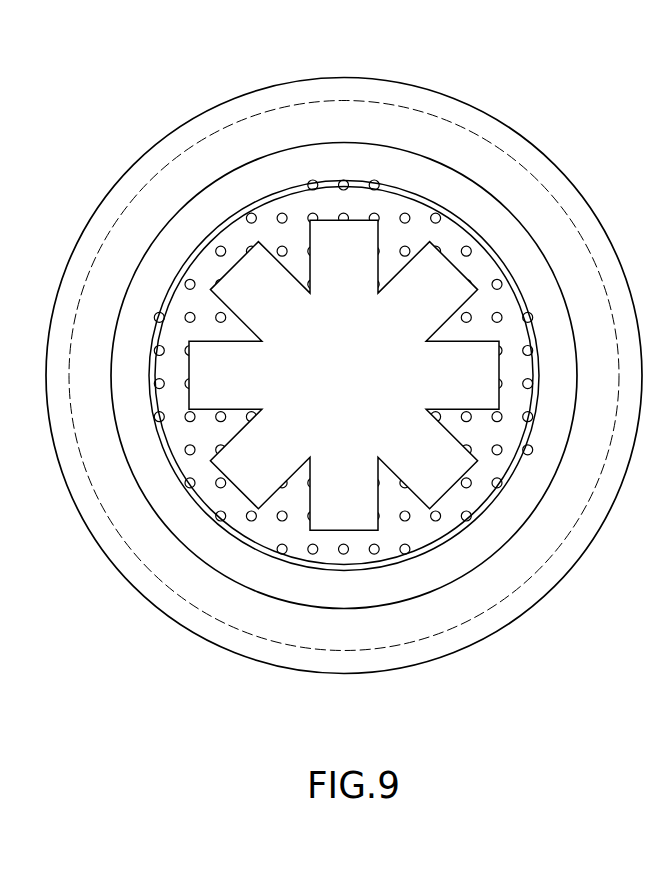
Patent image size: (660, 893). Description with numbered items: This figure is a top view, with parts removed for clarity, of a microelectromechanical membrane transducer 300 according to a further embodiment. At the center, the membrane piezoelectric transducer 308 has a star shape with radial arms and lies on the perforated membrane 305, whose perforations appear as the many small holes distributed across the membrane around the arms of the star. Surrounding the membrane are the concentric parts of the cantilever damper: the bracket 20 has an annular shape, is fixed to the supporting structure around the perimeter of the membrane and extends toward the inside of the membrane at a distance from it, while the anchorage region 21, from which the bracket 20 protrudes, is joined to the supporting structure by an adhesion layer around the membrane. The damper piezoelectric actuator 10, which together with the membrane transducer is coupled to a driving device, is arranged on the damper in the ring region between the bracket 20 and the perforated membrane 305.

The microelectromechanical membrane transducer 300 is at (348, 360).
The bracket 20 is at (508, 180).
The anchorage region 21 is at (163, 608).
The damper piezoelectric actuator 10 is at (477, 552).
The perforated membrane 305 is at (487, 445).
The membrane piezoelectric transducer 308 is at (364, 388).